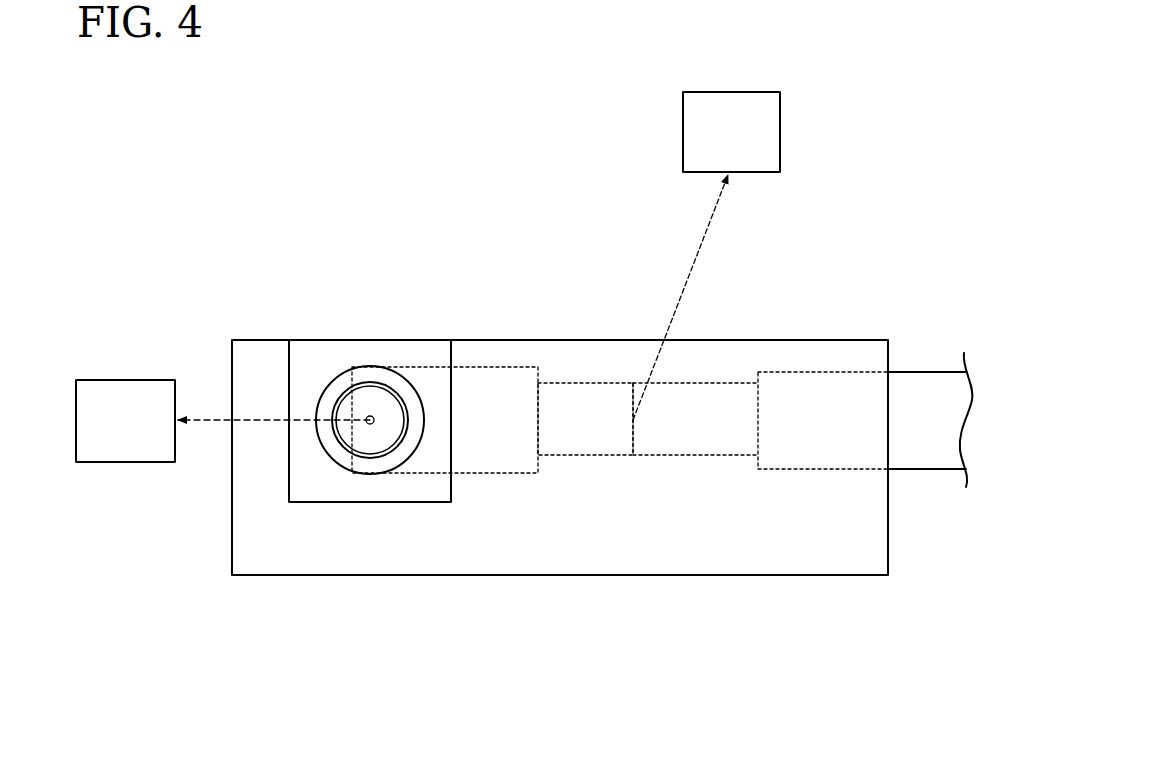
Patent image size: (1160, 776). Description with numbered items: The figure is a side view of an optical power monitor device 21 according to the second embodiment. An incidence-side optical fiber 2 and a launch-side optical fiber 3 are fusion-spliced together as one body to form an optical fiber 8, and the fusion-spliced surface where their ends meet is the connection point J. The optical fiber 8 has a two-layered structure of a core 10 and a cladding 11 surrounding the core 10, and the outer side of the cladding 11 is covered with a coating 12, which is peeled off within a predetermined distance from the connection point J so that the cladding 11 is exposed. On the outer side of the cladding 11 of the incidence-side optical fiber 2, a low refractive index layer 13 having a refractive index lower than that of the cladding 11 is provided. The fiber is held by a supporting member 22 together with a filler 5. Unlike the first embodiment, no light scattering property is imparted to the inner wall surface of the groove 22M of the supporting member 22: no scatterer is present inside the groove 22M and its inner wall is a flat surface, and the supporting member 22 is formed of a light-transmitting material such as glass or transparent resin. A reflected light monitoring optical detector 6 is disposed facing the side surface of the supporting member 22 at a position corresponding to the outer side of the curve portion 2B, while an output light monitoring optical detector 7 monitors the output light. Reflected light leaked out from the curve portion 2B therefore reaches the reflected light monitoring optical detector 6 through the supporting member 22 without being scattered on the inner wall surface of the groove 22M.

The optical power monitor device 21 is at (588, 162).
The output light monitoring optical detector 7 is at (775, 130).
The reflected light monitoring optical detector 6 is at (124, 385).
The groove 22M is at (370, 377).
The filler 5 is at (425, 352).
The curve portion 2B is at (387, 444).
The incidence-side optical fiber 2 is at (500, 366).
The supporting member 22 is at (558, 352).
The connection point J is at (632, 380).
The launch-side optical fiber 3 is at (826, 375).
The optical fiber 8 is at (697, 462).
The core 10 is at (370, 425).
The cladding 11 is at (350, 443).
The low refractive index layer 13 is at (388, 453).
The coating 12 is at (405, 455).